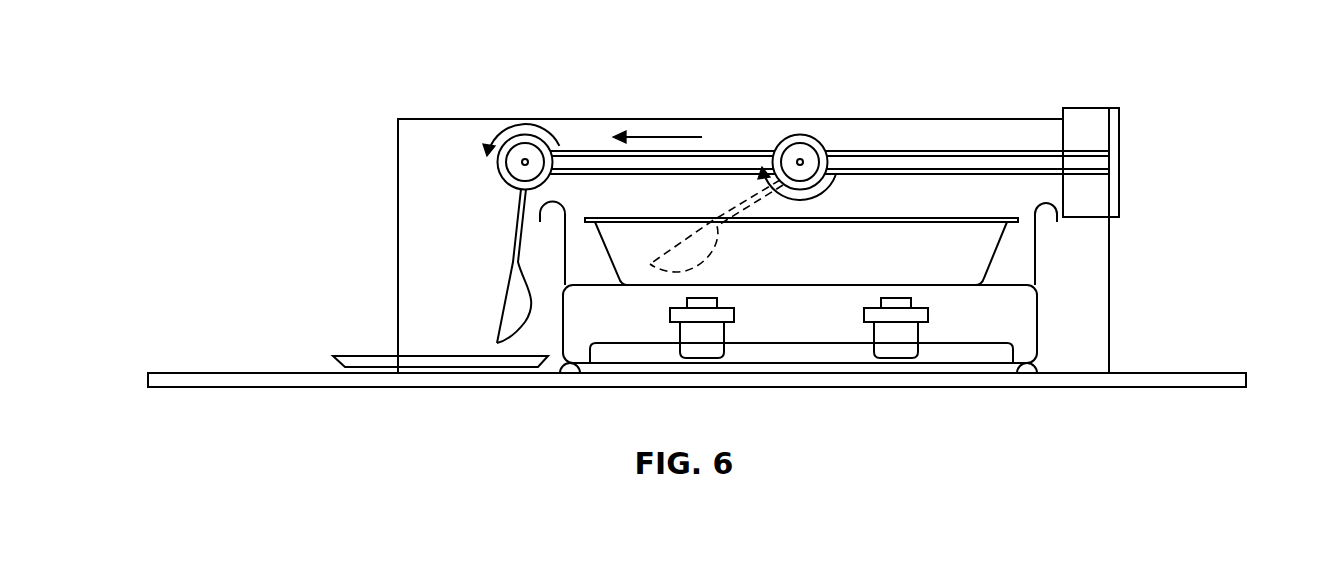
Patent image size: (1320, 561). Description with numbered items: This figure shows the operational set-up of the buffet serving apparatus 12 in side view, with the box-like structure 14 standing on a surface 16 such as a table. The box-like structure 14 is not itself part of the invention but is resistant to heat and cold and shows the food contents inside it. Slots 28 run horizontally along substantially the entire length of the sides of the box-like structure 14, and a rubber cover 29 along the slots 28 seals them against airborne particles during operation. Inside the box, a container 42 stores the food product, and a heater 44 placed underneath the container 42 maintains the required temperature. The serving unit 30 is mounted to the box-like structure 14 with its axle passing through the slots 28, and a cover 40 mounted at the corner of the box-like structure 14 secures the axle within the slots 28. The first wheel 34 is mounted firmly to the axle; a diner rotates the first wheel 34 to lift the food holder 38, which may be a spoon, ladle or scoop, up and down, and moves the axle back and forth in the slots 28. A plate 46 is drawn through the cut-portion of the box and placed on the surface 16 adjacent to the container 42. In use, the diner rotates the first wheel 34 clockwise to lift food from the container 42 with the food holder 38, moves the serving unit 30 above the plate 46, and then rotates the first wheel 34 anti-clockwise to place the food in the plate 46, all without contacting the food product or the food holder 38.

The buffet serving apparatus 12 is at (1181, 85).
The box-like structure 14 is at (415, 152).
The surface 16 is at (290, 372).
The slots 28 is at (1013, 162).
The rubber cover 29 is at (592, 151).
The serving unit 30 is at (539, 203).
The food holder 38 is at (513, 225).
The first wheel 34 is at (524, 136).
The cover 40 is at (1108, 160).
The container 42 is at (948, 235).
The heater 44 is at (902, 333).
The plate 46 is at (358, 355).